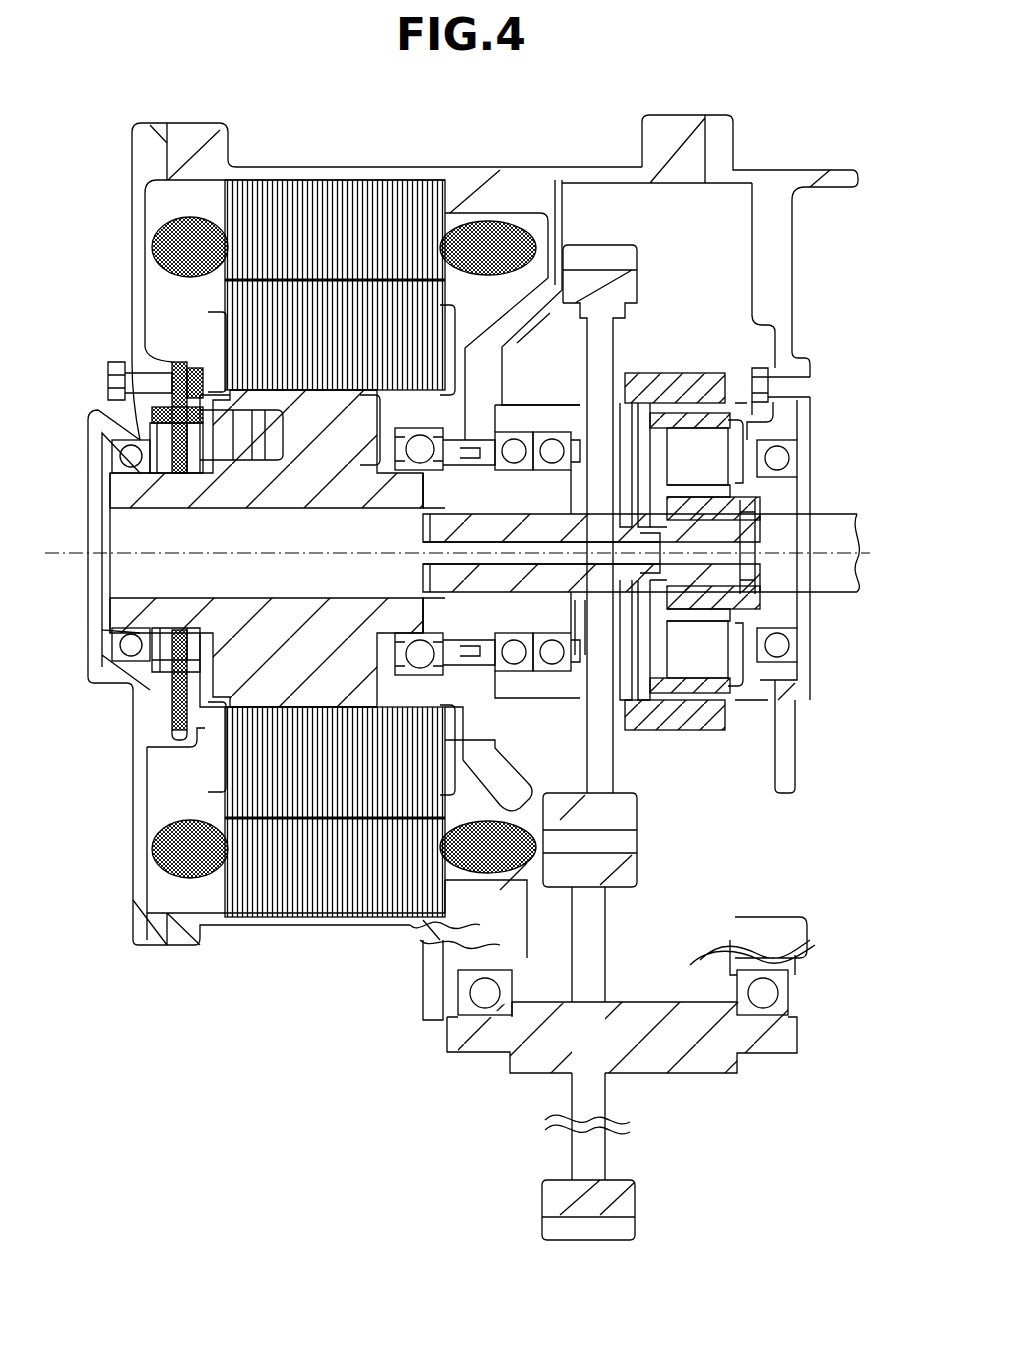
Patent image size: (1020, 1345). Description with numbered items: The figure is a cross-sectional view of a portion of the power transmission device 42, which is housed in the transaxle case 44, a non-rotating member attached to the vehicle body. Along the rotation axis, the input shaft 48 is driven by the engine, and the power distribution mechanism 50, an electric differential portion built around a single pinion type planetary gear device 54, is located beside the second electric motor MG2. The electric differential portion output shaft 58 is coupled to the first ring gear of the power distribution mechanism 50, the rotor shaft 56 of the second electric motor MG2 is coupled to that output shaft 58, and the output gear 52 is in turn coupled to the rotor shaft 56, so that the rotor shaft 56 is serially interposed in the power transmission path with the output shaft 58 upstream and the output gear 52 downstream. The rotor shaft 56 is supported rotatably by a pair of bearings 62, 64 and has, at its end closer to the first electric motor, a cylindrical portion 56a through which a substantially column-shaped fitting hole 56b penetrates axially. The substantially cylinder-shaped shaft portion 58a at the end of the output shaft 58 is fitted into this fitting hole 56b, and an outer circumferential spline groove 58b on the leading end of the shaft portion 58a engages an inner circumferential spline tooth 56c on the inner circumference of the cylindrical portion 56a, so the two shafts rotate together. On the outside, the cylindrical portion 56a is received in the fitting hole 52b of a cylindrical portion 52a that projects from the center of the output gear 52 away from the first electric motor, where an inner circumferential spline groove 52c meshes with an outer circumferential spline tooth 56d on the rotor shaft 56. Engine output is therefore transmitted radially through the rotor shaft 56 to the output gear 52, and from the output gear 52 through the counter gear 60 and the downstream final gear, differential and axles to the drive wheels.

The power transmission device 42 is at (611, 107).
The transaxle case 44 is at (527, 185).
The second electric motor MG2 is at (345, 195).
The input shaft 48 is at (845, 515).
The power distribution mechanism 50 is at (744, 558).
The output gear 52 is at (576, 505).
The cylindrical portion 52a is at (522, 437).
The fitting hole 52b is at (530, 437).
The inner circumferential spline groove 52c is at (568, 433).
The planetary gear device 54 is at (722, 762).
The rotor shaft 56 is at (322, 566).
The cylindrical portion 56a is at (578, 655).
The fitting hole 56b is at (313, 590).
The inner circumferential spline tooth 56c is at (452, 598).
The outer circumferential spline tooth 56d is at (445, 540).
The electric differential portion output shaft 58 is at (541, 639).
The shaft portion 58a is at (443, 517).
The outer circumferential spline groove 58b is at (440, 565).
The counter gear 60 is at (630, 860).
The bearing 62 is at (420, 437).
The bearing 64 is at (135, 430).